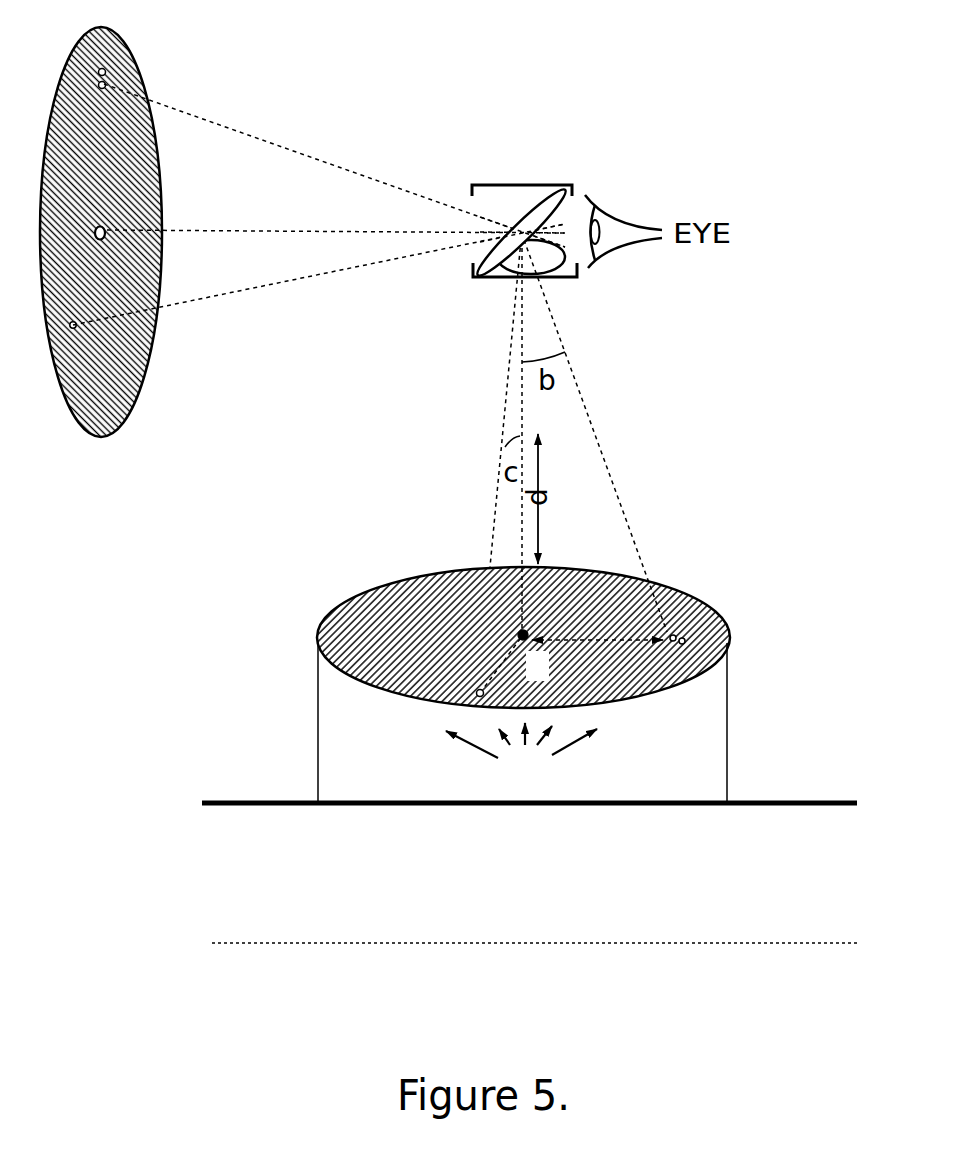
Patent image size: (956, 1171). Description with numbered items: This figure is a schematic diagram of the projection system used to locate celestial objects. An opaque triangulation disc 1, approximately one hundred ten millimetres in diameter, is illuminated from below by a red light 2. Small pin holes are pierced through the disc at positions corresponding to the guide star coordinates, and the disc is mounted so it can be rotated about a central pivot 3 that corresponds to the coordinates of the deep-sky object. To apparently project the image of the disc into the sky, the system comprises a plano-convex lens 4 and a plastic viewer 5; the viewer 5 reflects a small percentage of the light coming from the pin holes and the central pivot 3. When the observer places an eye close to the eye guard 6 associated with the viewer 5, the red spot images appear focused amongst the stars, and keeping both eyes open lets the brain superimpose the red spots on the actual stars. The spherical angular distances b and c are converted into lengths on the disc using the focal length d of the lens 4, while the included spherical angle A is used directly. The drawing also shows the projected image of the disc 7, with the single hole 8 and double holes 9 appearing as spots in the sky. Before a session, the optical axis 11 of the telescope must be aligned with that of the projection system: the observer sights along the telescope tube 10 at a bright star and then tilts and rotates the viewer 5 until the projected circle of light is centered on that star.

The opaque triangulation disc 1 is at (376, 613).
The red light 2 is at (521, 753).
The central pivot 3 is at (517, 628).
The plano-convex lens 4 is at (578, 268).
The plastic viewer 5 is at (530, 222).
The eye guard 6 is at (582, 185).
The target object 7 is at (164, 302).
The point on disk 8 is at (476, 691).
The points on disk 9 is at (684, 630).
The telescope tube 10 is at (297, 808).
The optical axis of the telescope 11 is at (608, 938).